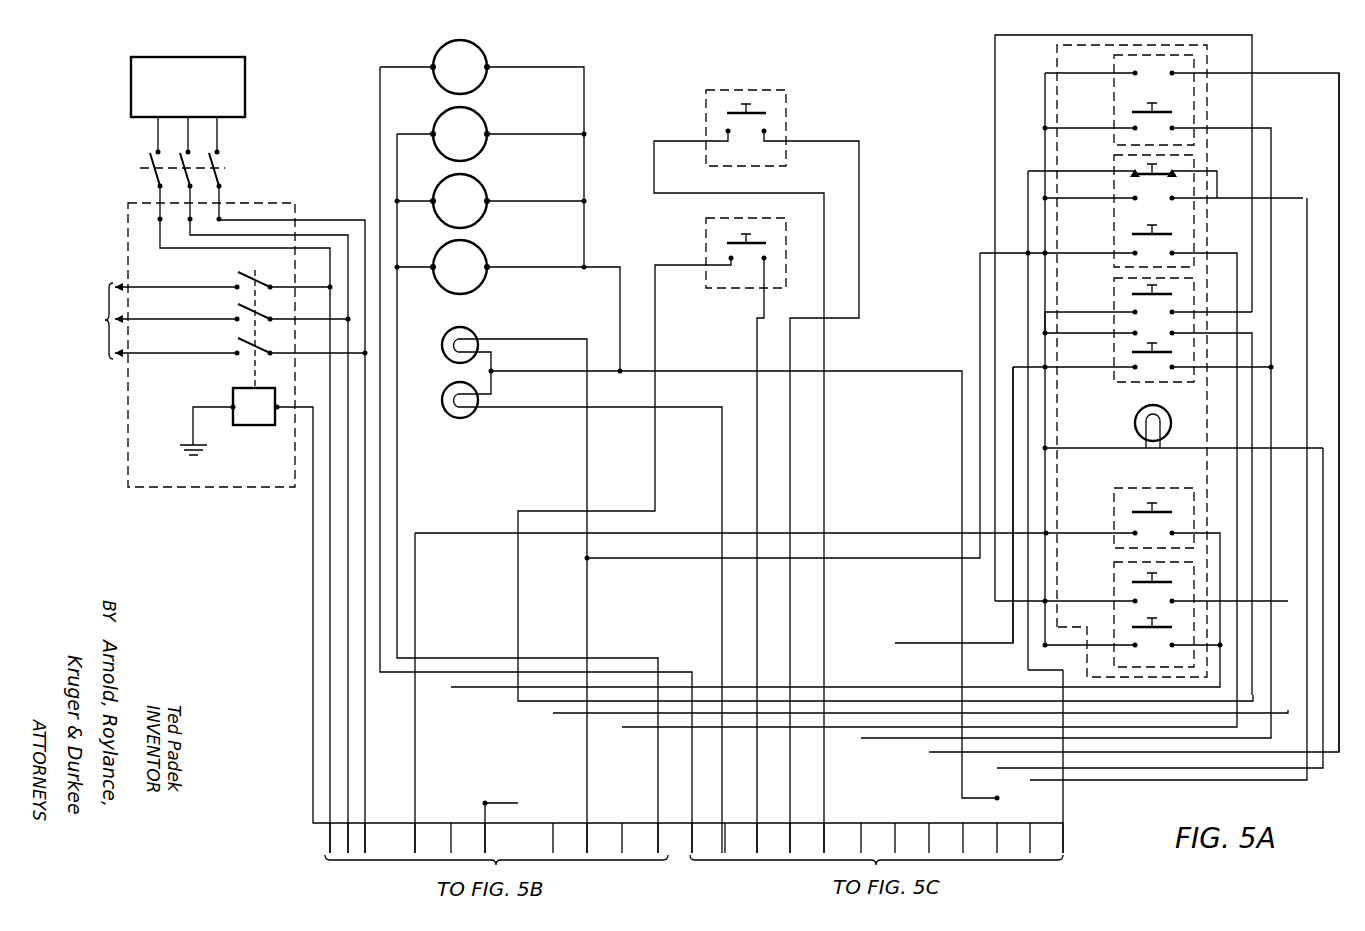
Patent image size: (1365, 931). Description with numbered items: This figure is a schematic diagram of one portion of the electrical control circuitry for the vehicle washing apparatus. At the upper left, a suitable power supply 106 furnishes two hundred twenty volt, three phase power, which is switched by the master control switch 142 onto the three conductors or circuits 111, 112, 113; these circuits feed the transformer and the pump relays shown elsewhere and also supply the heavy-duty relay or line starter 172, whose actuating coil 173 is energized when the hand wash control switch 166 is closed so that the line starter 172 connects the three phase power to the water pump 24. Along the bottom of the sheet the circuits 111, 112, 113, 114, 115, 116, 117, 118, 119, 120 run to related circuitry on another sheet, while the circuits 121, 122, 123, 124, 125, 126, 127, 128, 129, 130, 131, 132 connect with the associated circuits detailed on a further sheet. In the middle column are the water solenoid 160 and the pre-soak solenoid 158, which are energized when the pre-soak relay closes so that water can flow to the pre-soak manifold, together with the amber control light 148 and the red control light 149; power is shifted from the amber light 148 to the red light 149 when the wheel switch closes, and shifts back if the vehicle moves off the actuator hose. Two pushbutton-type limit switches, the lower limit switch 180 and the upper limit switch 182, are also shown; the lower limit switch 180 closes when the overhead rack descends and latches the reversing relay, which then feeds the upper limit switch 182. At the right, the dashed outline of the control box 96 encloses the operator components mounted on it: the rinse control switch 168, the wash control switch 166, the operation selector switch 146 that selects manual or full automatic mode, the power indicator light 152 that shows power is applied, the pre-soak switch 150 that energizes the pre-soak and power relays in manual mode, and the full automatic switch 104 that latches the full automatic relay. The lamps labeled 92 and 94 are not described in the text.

The power supply 106 is at (246, 100).
The master control switch 142 is at (140, 168).
The line starter 172 is at (193, 328).
The actuating coil 173 is at (258, 426).
The water pump 24 is at (193, 315).
The indicator lamp 92 is at (484, 55).
The water solenoid 160 is at (482, 120).
The pre-soak solenoid 158 is at (482, 187).
The indicator lamp 94 is at (482, 253).
The red control light 149 is at (472, 331).
The amber control light 148 is at (470, 415).
The upper limit switch 182 is at (786, 97).
The lower limit switch 180 is at (706, 236).
The control box 96 is at (1207, 125).
The rinse control switch 168 is at (1114, 102).
The wash control switch 166 is at (1114, 229).
The operation selector switch 146 is at (1114, 293).
The power indicator light 152 is at (1135, 423).
The pre-soak switch 150 is at (1114, 499).
The full automatic switch 104 is at (1114, 575).
The circuit 111 is at (328, 836).
The circuit 112 is at (350, 818).
The circuit 113 is at (366, 835).
The circuit 114 is at (416, 833).
The circuit 115 is at (452, 833).
The circuit 116 is at (486, 833).
The circuit 117 is at (554, 833).
The circuit 118 is at (588, 833).
The circuit 119 is at (623, 833).
The circuit 120 is at (659, 833).
The circuit 121 is at (693, 833).
The circuit 122 is at (726, 833).
The circuit 123 is at (758, 833).
The circuit 124 is at (791, 833).
The circuit 125 is at (825, 833).
The circuit 126 is at (862, 833).
The circuit 127 is at (896, 833).
The circuit 128 is at (930, 833).
The circuit 129 is at (964, 833).
The circuit 130 is at (998, 833).
The circuit 131 is at (1031, 833).
The circuit 132 is at (1064, 833).